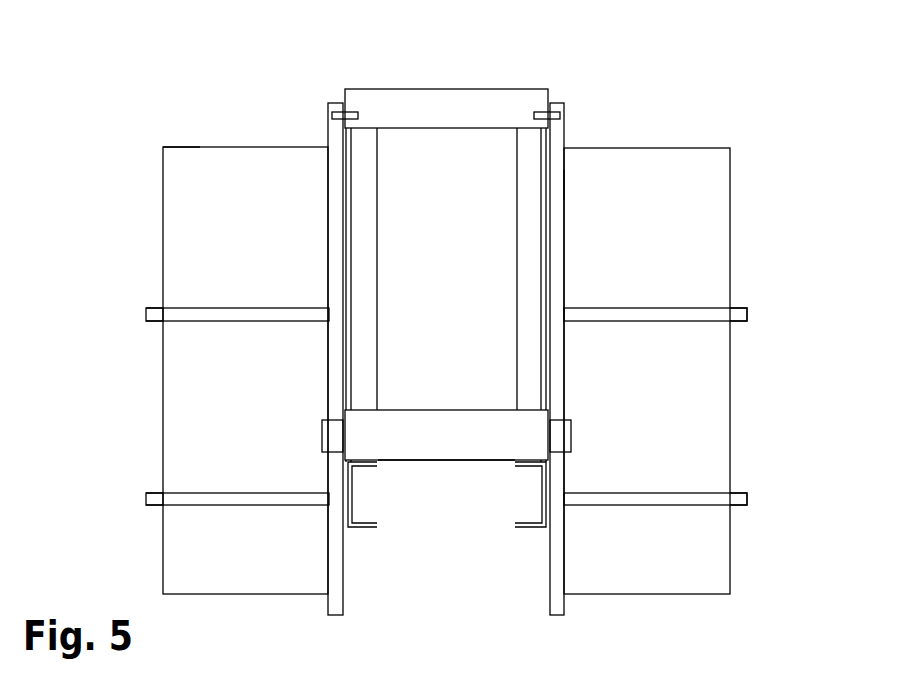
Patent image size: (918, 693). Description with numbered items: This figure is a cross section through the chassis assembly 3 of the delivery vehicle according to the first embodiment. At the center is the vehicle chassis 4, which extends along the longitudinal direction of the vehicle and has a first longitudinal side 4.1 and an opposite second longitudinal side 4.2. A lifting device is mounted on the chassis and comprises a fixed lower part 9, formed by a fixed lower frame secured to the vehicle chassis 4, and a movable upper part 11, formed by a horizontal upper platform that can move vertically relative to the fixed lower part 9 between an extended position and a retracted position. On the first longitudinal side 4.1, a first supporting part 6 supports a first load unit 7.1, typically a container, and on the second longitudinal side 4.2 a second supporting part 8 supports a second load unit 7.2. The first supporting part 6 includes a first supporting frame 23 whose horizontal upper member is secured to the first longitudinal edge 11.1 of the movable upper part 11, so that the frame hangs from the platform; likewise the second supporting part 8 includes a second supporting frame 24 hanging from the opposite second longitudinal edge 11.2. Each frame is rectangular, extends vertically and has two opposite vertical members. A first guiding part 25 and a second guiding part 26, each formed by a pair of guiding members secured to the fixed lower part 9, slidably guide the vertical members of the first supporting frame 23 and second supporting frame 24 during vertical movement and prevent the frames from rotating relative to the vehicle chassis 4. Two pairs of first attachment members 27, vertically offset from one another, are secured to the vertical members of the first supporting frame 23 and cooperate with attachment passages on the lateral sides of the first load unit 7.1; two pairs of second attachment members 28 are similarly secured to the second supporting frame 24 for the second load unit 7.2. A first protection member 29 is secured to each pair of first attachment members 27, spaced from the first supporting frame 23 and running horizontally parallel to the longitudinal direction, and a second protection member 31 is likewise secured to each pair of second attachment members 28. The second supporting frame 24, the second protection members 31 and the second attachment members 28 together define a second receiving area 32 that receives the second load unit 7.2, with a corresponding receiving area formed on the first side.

The chassis assembly 3 is at (419, 517).
The vehicle chassis 4 is at (362, 527).
The first longitudinal side 4.1 is at (553, 516).
The second longitudinal side 4.2 is at (338, 514).
The first supporting part 6 is at (572, 181).
The first load unit 7.1 is at (702, 167).
The second load unit 7.2 is at (185, 175).
The second supporting part 8 is at (312, 221).
The fixed lower part 9 is at (458, 432).
The movable upper part 11 is at (467, 118).
The first longitudinal edge 11.1 is at (562, 103).
The second longitudinal edge 11.2 is at (333, 103).
The first supporting frame 23 is at (557, 130).
The second supporting frame 24 is at (333, 130).
The first guiding part 25 is at (565, 437).
The second guiding part 26 is at (330, 433).
The first attachment member 27 is at (680, 312).
The second attachment member 28 is at (197, 315).
The first protection member 29 is at (742, 314).
The second protection member 31 is at (155, 314).
The second receiving area 32 is at (222, 241).